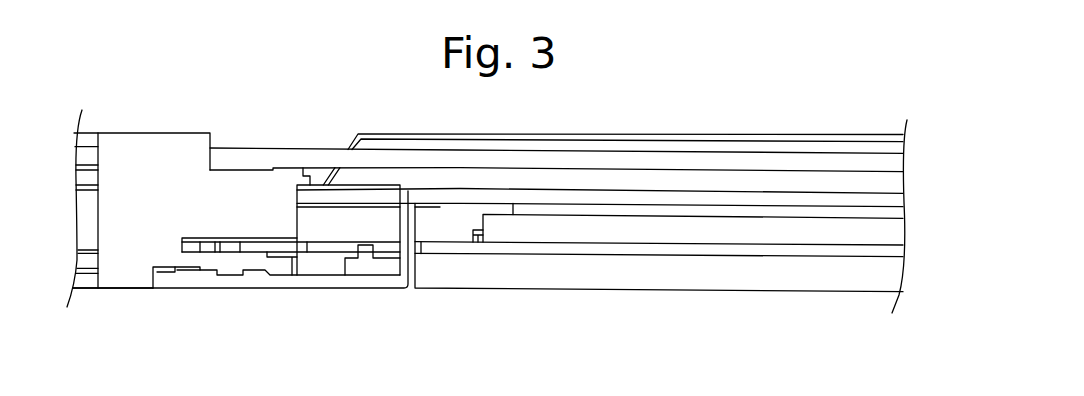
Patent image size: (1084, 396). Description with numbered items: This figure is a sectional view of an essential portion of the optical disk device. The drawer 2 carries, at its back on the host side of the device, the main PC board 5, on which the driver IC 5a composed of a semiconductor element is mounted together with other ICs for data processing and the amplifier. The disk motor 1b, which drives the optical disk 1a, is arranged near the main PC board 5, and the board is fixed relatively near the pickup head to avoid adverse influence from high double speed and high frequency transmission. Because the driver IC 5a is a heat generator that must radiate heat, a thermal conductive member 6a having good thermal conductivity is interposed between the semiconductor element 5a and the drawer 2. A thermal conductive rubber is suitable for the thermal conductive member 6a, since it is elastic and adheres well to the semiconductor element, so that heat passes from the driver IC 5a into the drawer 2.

The optical disk 1a is at (747, 163).
The disk motor 1b is at (157, 147).
The drawer 2 is at (785, 197).
The main PC board 5 is at (492, 247).
The driver IC 5a is at (577, 235).
The thermal conductive member 6a is at (683, 213).